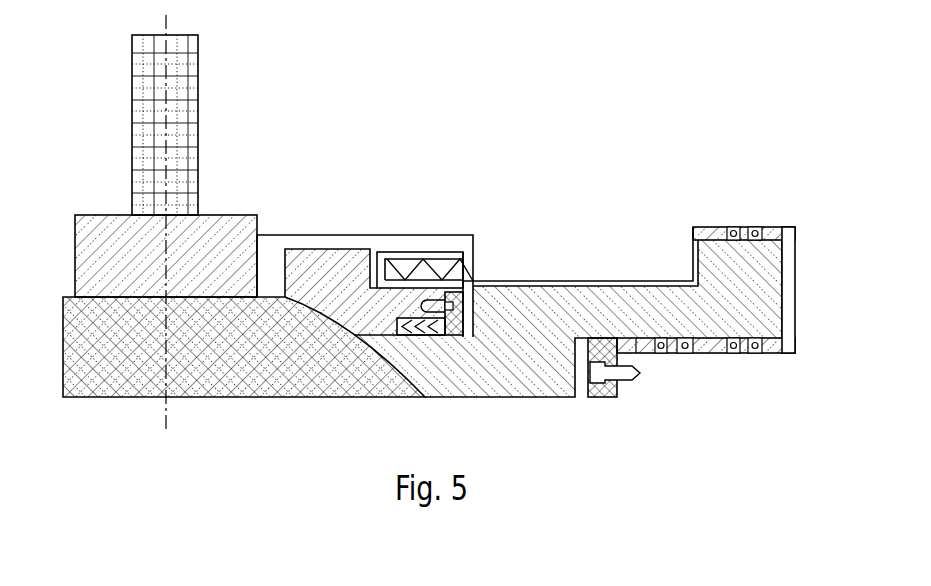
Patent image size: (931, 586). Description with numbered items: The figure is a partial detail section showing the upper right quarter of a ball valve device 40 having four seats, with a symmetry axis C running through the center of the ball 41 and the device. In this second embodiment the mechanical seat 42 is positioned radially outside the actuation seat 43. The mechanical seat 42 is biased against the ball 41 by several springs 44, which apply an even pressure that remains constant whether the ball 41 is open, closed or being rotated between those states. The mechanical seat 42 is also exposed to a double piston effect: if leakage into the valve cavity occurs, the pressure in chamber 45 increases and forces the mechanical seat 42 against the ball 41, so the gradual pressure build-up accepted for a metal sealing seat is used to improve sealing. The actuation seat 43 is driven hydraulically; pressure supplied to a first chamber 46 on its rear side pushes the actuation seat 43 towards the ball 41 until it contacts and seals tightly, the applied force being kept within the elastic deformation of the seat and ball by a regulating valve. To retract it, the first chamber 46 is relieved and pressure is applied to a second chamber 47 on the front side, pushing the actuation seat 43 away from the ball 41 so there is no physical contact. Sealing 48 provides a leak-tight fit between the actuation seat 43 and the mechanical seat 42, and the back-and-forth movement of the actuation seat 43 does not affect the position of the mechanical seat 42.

The ball valve device 40 is at (306, 94).
The ball 41 is at (383, 389).
The mechanical seat 42 is at (350, 249).
The actuation seat 43 is at (601, 281).
The springs 44 is at (446, 252).
The chamber 45 is at (287, 235).
The first chamber 46 is at (795, 270).
The second chamber 47 is at (467, 337).
The sealing 48 is at (420, 337).